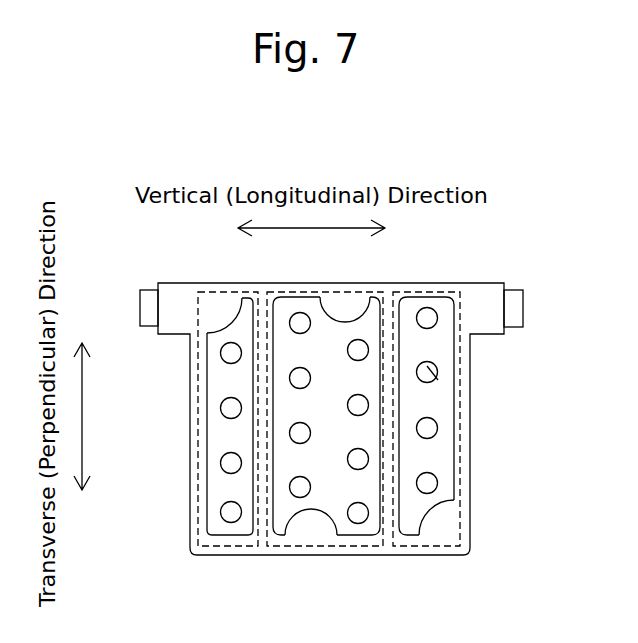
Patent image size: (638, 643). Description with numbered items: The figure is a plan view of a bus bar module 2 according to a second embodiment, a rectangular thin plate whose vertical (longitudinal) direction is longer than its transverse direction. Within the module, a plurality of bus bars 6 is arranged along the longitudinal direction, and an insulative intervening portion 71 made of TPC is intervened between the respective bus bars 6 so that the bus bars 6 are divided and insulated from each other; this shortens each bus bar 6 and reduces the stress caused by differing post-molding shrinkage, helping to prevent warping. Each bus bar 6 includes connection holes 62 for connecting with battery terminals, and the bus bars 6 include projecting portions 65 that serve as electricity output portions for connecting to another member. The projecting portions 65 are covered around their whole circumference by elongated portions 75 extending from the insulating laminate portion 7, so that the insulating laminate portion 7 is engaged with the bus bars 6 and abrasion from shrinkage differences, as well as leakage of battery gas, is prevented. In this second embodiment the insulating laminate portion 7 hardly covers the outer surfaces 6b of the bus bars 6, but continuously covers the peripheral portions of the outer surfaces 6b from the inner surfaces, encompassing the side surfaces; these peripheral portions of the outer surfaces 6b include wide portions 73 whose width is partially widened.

The bus bar module 2 is at (356, 418).
The bus bar 6 is at (230, 485).
The outer surface 6b is at (302, 345).
The insulating laminate portion 7 is at (228, 547).
The connection hole 62 is at (438, 380).
The projecting portion 65 is at (518, 308).
The insulative intervening portion 71 is at (263, 386).
The wide portion 73 is at (345, 307).
The elongated portion 75 is at (487, 293).